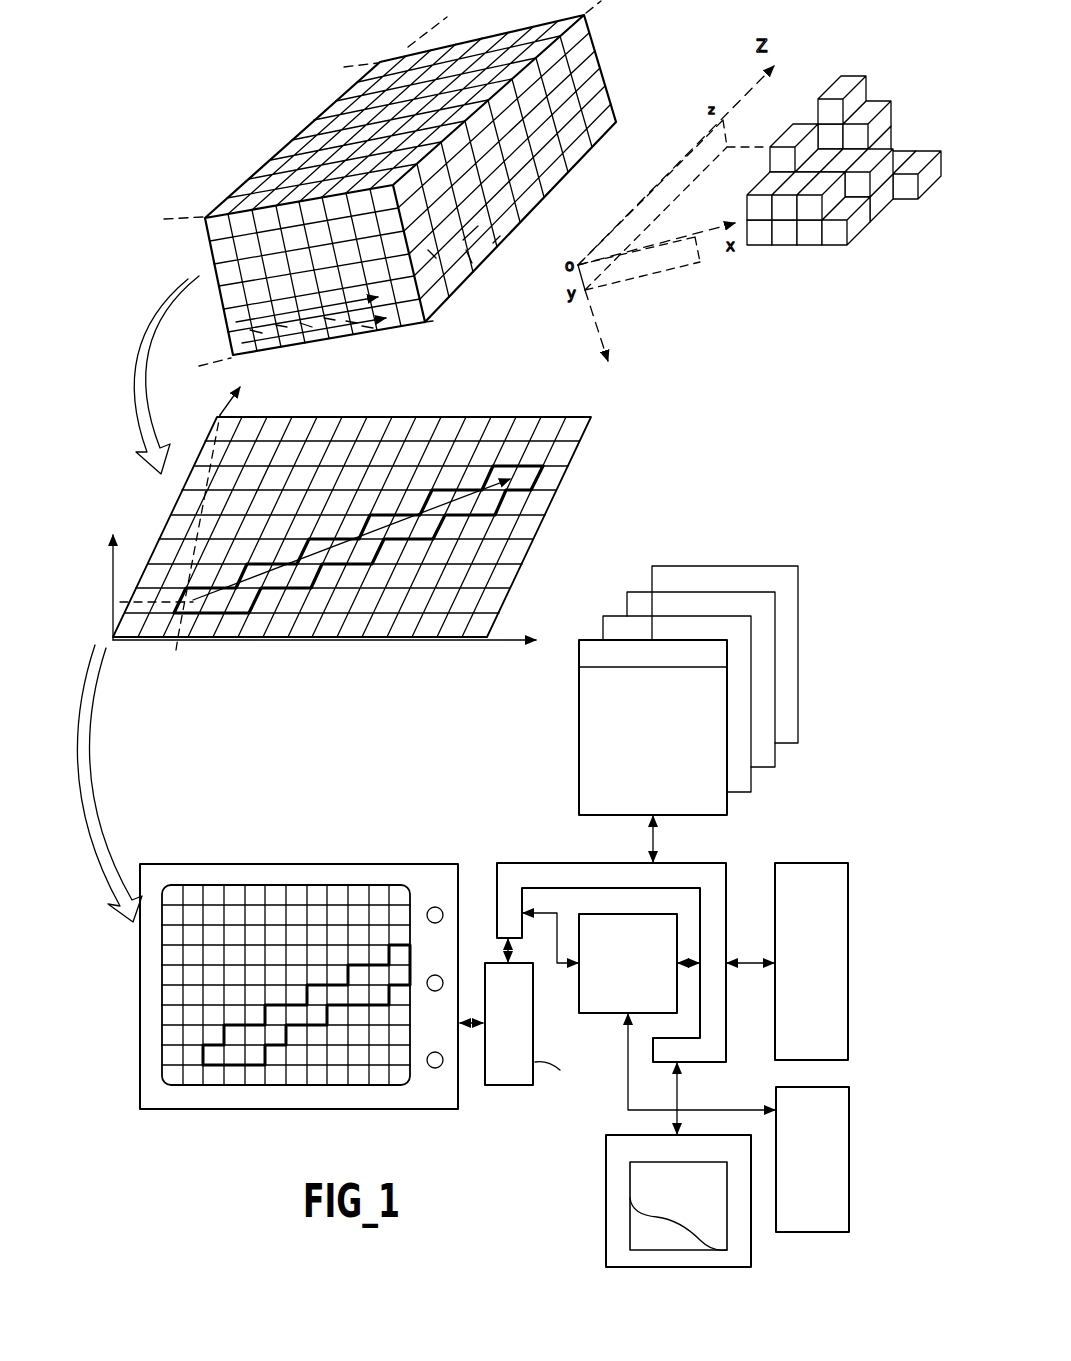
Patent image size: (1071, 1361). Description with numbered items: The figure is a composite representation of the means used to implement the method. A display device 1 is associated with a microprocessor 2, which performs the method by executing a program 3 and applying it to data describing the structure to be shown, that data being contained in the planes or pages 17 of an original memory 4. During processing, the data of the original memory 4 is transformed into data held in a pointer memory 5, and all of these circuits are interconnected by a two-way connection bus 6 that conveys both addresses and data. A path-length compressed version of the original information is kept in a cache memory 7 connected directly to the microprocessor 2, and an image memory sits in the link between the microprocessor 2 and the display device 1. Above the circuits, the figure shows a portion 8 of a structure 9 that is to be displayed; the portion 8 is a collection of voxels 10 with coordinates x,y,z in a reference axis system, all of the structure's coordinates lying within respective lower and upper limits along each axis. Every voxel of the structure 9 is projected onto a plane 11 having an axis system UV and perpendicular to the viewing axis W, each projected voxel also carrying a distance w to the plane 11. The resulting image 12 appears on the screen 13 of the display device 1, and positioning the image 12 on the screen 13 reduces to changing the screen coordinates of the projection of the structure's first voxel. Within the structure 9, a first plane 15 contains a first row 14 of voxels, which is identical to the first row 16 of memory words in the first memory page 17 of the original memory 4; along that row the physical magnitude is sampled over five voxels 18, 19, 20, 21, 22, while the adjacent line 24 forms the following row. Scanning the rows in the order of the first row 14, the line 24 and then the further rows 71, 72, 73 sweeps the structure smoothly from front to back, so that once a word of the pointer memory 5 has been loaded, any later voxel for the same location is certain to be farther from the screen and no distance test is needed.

The display device 1 is at (285, 1010).
The microprocessor 2 is at (598, 1005).
The program 3 is at (630, 1197).
The original memory 4 is at (670, 690).
The pointer memory 5 is at (783, 863).
The two-way connection bus 6 is at (708, 862).
The cache memory 7 is at (849, 1183).
The portion 8 is at (842, 169).
The structure 9 is at (645, 108).
The voxel 10 is at (838, 88).
The plane 11 is at (622, 395).
The image 12 is at (253, 1048).
The screen 13 is at (167, 1035).
The first row 14 is at (357, 323).
The first plane 15 is at (431, 322).
The first row of memory words 16 is at (580, 655).
The planes or pages 17 is at (617, 637).
The voxel 18 is at (232, 330).
The voxel 19 is at (262, 333).
The voxel 20 is at (287, 327).
The voxel 21 is at (312, 327).
The voxel 22 is at (335, 320).
The line 24 is at (373, 328).
The row 71 is at (428, 250).
The row 72 is at (463, 240).
The row 73 is at (493, 243).